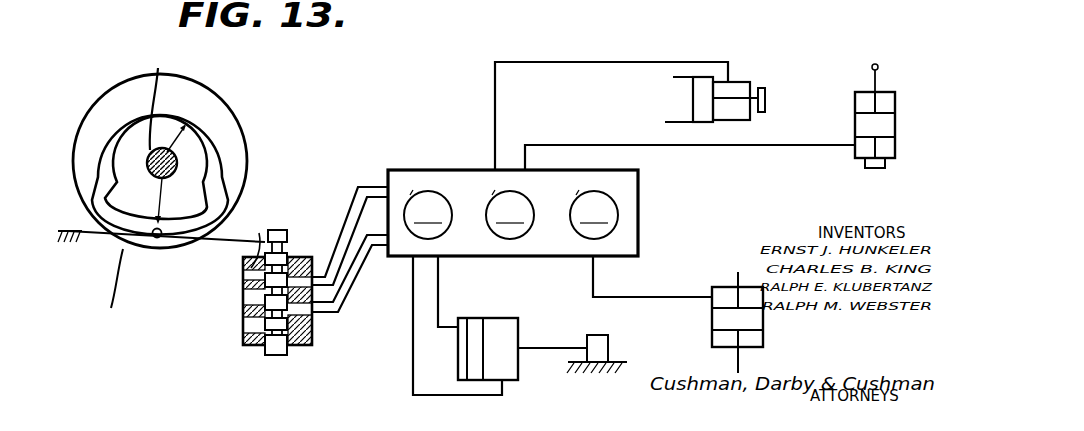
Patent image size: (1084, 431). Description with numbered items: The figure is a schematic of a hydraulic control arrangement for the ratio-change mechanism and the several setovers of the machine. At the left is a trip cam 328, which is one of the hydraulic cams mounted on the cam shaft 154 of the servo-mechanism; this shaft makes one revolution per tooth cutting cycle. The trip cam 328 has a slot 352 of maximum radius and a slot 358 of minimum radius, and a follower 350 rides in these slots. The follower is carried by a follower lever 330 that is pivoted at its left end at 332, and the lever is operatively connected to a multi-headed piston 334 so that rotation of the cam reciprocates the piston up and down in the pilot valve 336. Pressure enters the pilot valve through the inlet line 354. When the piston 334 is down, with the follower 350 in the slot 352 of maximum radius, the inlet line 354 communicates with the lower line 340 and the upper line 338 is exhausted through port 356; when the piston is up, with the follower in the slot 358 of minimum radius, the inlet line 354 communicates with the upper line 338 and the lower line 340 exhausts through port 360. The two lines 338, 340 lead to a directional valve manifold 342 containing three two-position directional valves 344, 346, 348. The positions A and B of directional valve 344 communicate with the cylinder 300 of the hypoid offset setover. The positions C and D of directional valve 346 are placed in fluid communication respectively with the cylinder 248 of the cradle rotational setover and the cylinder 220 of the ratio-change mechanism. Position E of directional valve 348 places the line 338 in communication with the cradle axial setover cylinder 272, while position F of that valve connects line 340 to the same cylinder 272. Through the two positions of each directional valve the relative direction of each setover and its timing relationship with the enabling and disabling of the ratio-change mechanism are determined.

The cam shaft 154 is at (152, 135).
The slot of minimum radius 358 is at (185, 113).
The trip cam 328 is at (243, 147).
The follower 350 is at (155, 241).
The pivot 332 is at (68, 250).
The slot of maximum radius 352 is at (104, 296).
The follower lever 330 is at (242, 275).
The exhaust port 356 is at (262, 241).
The multi-headed piston 334 is at (296, 283).
The pilot valve 336 is at (254, 323).
The inlet line 354 is at (240, 296).
The exhaust port 360 is at (242, 331).
The upper line 338 is at (372, 186).
The lower line 340 is at (355, 281).
The directional valve manifold 342 is at (560, 191).
The directional valve 344 is at (428, 215).
The directional valve 346 is at (510, 215).
The directional valve 348 is at (594, 215).
The cylinder 300 is at (520, 318).
The cylinder 248 is at (737, 82).
The cylinder 220 is at (890, 92).
The cylinder 272 is at (712, 303).